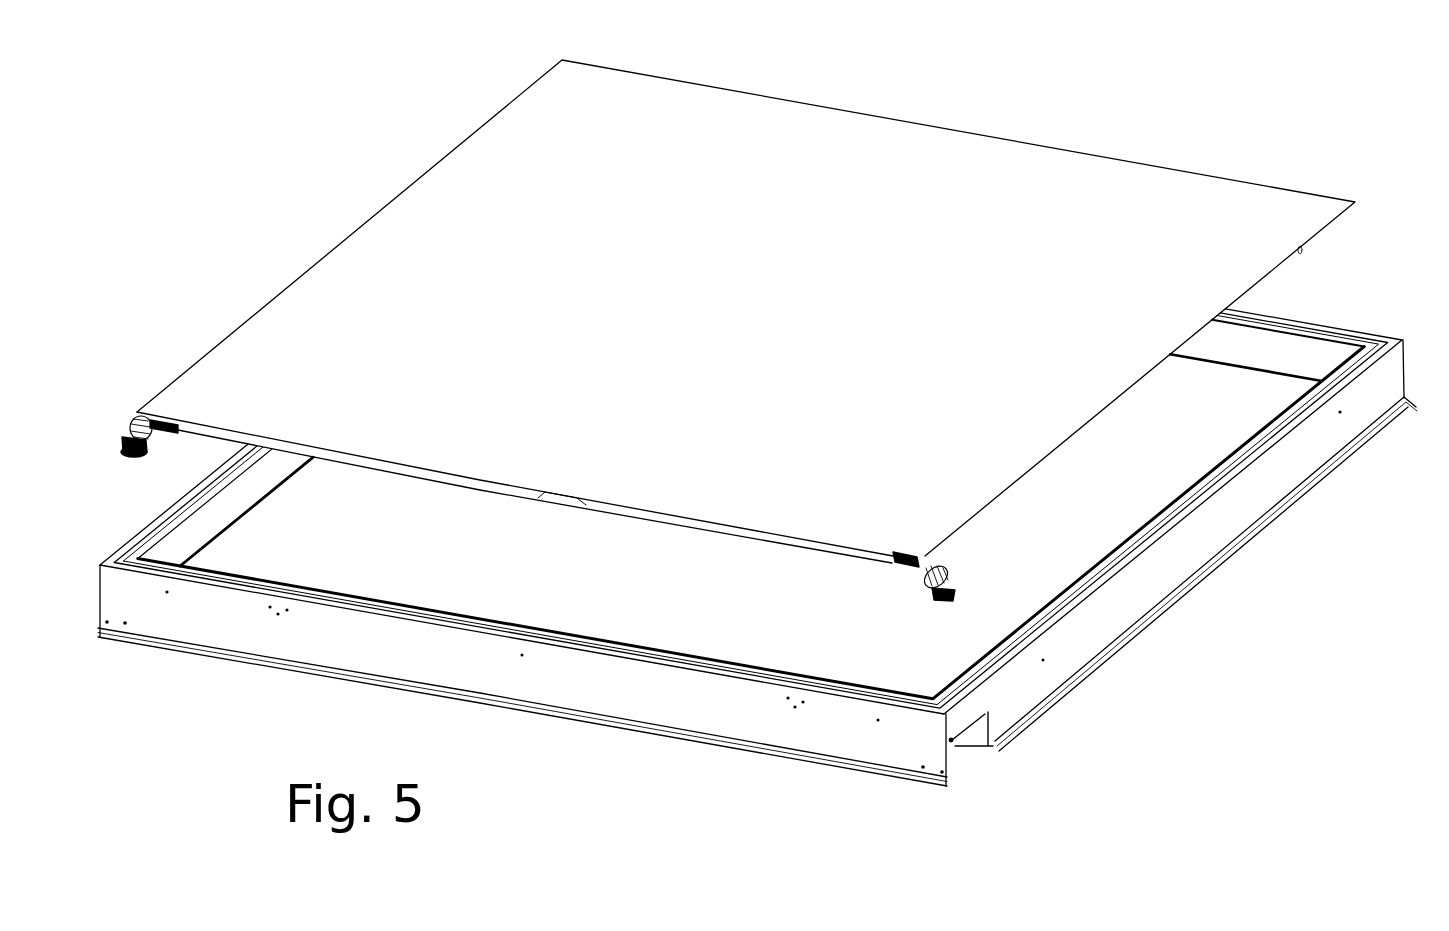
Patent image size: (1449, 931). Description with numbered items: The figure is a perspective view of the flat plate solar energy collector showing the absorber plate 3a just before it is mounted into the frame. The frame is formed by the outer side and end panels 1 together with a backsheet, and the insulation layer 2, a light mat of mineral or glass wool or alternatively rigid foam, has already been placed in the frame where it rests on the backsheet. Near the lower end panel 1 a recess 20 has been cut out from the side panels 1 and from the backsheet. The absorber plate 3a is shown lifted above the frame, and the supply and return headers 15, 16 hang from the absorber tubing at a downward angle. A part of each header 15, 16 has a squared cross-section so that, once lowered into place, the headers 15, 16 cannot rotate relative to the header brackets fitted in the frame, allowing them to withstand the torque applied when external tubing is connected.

The side and end panels 1 is at (397, 670).
The insulation layer 2 is at (1248, 396).
The absorber plate 3a is at (982, 153).
The supply header 15 is at (952, 582).
The return header 16 is at (129, 430).
The recess 20 is at (957, 746).